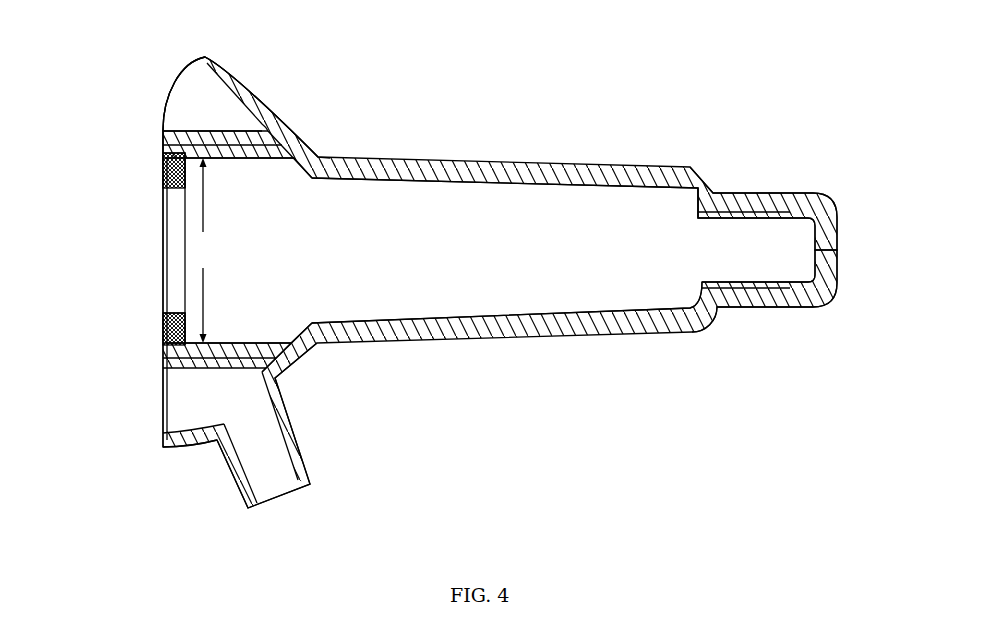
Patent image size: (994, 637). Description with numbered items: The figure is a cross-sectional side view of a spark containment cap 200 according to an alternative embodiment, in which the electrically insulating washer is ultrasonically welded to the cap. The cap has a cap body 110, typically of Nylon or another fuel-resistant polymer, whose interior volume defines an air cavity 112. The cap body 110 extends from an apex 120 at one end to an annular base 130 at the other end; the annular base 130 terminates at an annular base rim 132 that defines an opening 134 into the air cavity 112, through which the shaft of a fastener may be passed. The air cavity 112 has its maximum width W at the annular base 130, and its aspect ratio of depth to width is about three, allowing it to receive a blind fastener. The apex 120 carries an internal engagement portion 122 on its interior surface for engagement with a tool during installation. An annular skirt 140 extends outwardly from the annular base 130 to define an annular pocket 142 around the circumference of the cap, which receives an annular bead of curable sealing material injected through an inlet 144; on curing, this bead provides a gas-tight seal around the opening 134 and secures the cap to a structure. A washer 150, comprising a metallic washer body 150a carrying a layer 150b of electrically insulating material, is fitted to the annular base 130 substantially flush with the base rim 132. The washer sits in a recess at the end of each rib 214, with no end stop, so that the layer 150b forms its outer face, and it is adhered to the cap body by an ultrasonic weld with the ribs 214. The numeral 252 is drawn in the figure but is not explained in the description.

The spark containment cap 200 is at (664, 102).
The cap body 110 is at (552, 337).
The air cavity 112 is at (510, 261).
The apex 120 is at (758, 308).
The internal engagement portion 122 is at (754, 212).
The annular base 130 is at (328, 104).
The annular base rim 132 is at (163, 152).
The opening 134 is at (148, 296).
The annular skirt 140 is at (232, 62).
The annular pocket 142 is at (227, 403).
The inlet 144 is at (300, 442).
The washer 150 is at (186, 327).
The washer body 150a is at (163, 330).
The layer 150b is at (163, 180).
The ribs 214 is at (237, 150).
The inner wall 252 is at (172, 186).
The maximum width W is at (205, 250).